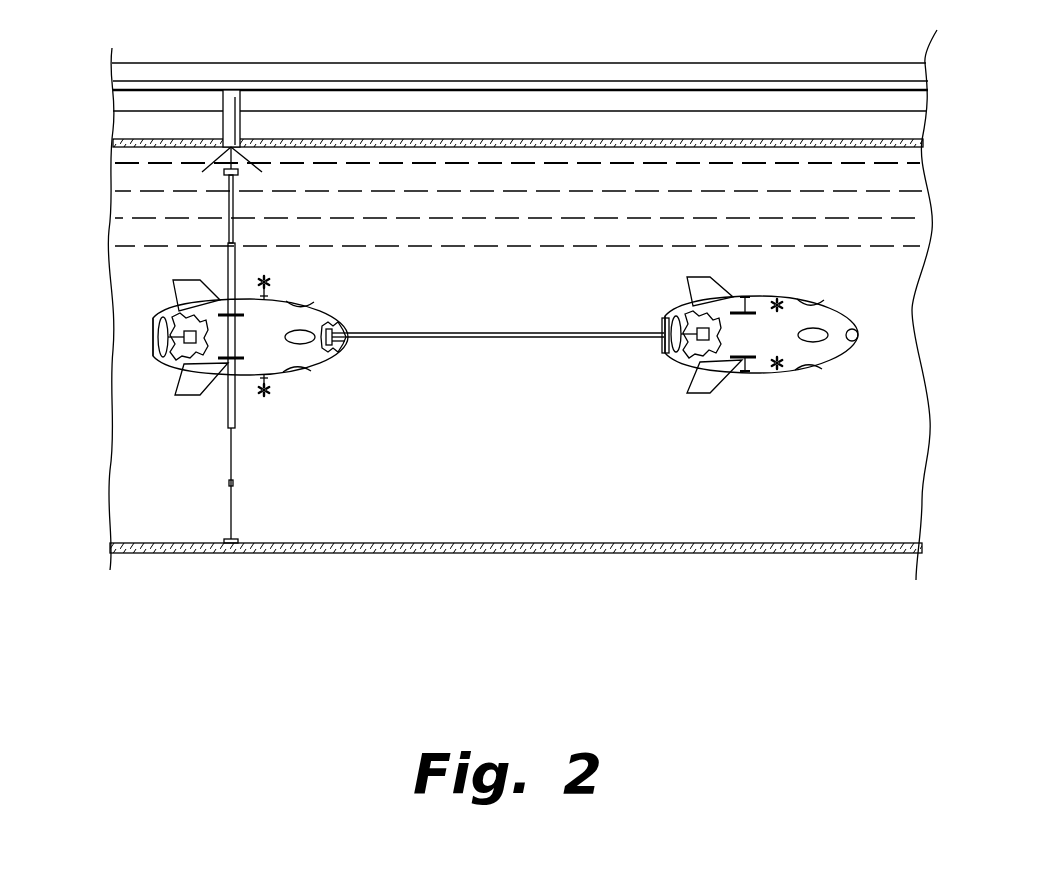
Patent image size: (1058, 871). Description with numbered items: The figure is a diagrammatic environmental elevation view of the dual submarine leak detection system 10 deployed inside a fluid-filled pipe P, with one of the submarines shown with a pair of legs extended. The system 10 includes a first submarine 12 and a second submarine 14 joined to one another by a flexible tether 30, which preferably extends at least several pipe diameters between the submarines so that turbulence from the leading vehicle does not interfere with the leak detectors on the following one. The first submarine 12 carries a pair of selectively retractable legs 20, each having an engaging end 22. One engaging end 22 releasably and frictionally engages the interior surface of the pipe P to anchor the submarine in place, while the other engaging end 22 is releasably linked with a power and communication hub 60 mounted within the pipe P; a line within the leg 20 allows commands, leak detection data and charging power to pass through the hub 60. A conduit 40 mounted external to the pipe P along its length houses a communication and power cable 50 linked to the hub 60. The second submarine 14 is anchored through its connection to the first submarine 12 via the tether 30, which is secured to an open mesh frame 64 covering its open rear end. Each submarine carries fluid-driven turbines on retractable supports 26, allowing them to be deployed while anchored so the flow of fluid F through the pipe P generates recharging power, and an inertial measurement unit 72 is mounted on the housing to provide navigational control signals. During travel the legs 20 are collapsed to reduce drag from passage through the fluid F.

The dual submarine leak detection system 10 is at (520, 367).
The first submarine 12 is at (286, 352).
The second submarine 14 is at (743, 353).
The retractable leg 20 is at (234, 230).
The engaging end 22 is at (238, 172).
The retractable support 26 is at (280, 292).
The tether 30 is at (500, 338).
The conduit 40 is at (493, 75).
The communication and power cable 50 is at (630, 81).
The power and communication hub 60 is at (233, 316).
The open frame 64 is at (662, 326).
The inertial measurement unit 72 is at (854, 327).
The fluid F is at (483, 466).
The pipe P is at (493, 567).